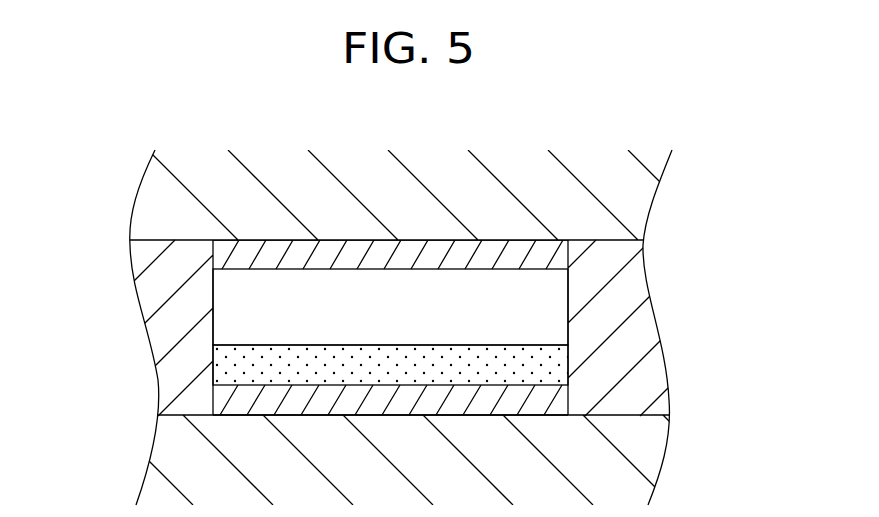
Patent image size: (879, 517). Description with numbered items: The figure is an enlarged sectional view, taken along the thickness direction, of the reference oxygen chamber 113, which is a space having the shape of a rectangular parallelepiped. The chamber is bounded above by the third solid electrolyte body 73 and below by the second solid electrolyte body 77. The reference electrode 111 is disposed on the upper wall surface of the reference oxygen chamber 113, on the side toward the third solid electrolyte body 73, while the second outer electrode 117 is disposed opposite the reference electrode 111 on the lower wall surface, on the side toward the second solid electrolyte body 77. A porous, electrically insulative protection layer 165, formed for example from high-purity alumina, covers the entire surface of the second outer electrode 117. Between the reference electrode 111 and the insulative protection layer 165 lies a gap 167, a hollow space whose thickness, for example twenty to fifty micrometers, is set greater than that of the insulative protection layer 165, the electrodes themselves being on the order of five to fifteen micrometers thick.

The third solid electrolyte body 73 is at (633, 203).
The second solid electrolyte body 77 is at (643, 455).
The reference electrode 111 is at (543, 257).
The reference oxygen chamber 113 is at (543, 310).
The insulative protection layer 165 is at (543, 365).
The second outer electrode 117 is at (545, 402).
The gap 167 is at (250, 318).